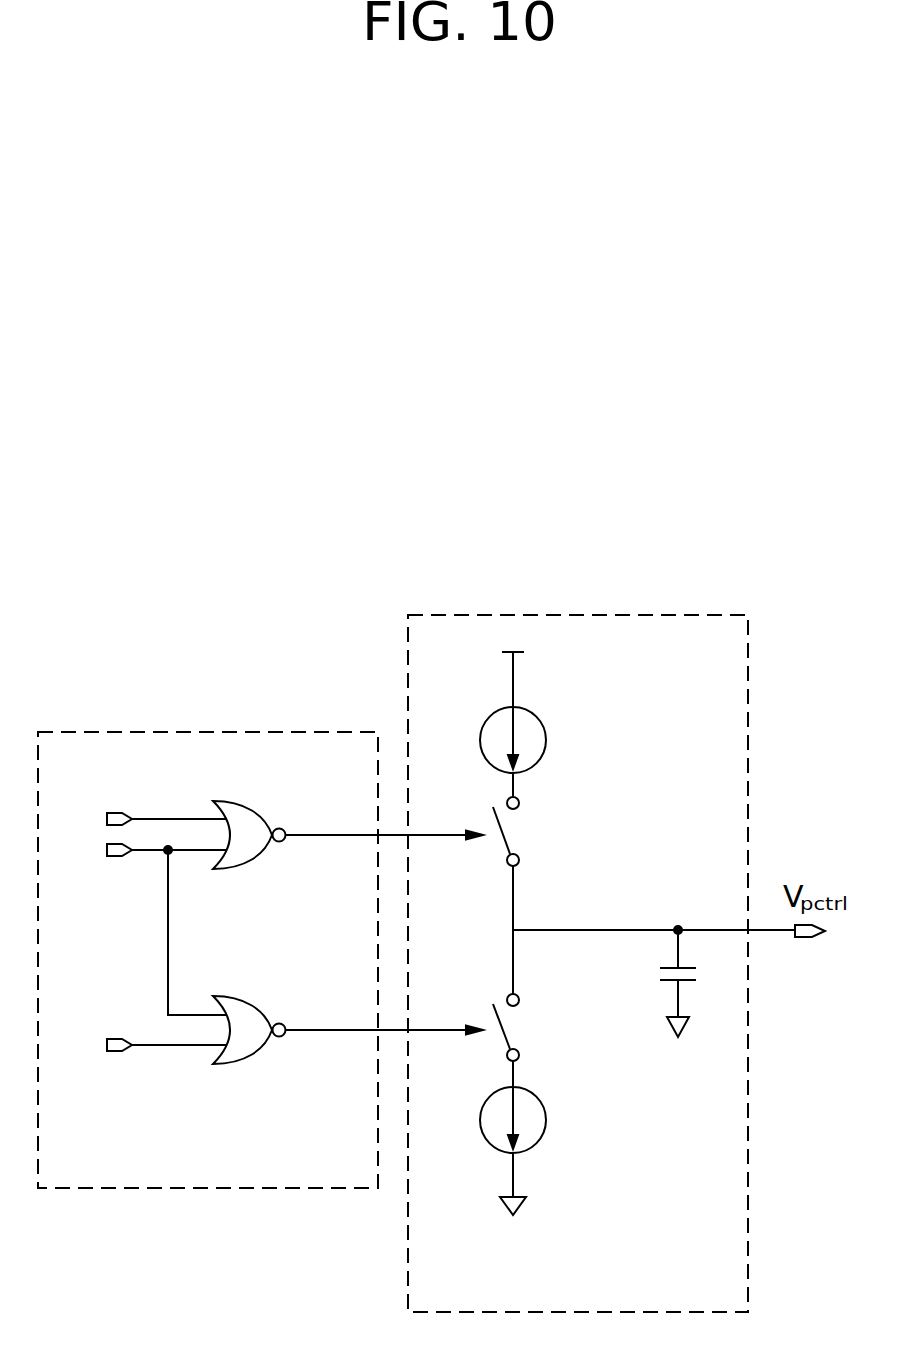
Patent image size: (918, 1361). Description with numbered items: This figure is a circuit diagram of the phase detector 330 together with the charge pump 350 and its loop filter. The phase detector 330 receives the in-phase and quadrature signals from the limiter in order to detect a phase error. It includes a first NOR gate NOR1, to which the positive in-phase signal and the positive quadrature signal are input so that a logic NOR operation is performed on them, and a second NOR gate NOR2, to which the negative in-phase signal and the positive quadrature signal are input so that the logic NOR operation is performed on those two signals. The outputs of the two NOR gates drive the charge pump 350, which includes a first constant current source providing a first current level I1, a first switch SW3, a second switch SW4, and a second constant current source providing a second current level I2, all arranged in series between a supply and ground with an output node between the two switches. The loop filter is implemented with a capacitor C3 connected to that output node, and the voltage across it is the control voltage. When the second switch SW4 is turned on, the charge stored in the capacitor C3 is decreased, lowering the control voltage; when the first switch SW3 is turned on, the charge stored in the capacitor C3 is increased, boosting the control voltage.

The phase detector 330 is at (248, 730).
The charge pump 350 is at (637, 614).
The first NOR gate NOR1 is at (267, 812).
The second NOR gate NOR2 is at (265, 1008).
The first switch SW3 is at (535, 831).
The second switch SW4 is at (532, 1027).
The first constant current source I1 is at (531, 724).
The second constant current source I2 is at (531, 1151).
The capacitor C3 is at (658, 983).